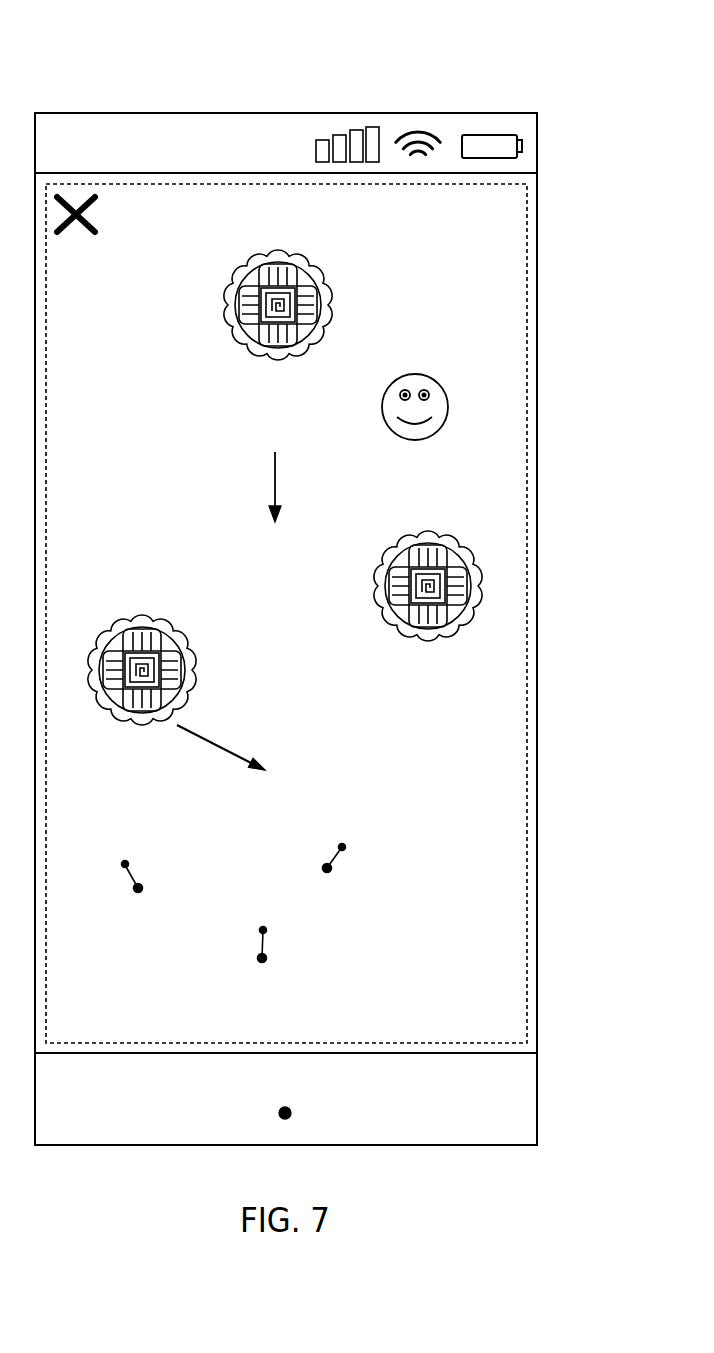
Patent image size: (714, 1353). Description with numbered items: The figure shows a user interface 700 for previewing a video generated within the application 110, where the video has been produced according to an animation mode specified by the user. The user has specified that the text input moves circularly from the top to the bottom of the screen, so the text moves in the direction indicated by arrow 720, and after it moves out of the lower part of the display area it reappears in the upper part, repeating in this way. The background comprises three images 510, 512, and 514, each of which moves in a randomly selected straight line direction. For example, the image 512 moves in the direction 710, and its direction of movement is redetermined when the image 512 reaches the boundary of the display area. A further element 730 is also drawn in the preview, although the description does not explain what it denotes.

The user interface 700 is at (155, 40).
The application 110 is at (352, 113).
The mooncake sticker 510 is at (272, 248).
The mooncake sticker 512 is at (135, 616).
The mooncake sticker 514 is at (422, 529).
The movement arrow 710 is at (217, 742).
The movement arrow 720 is at (278, 490).
The music note element 730 is at (343, 846).